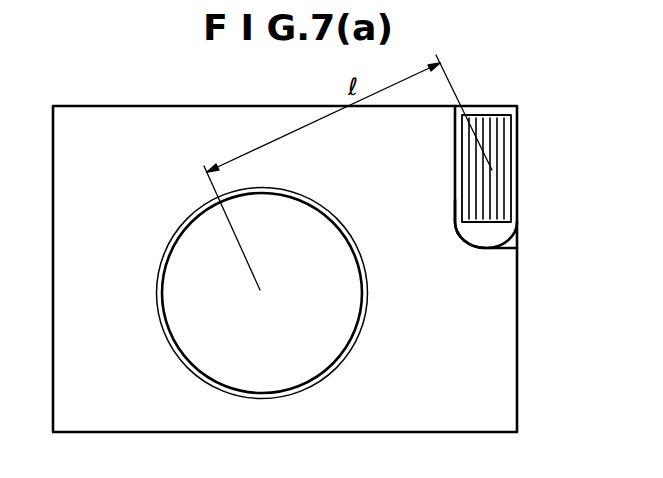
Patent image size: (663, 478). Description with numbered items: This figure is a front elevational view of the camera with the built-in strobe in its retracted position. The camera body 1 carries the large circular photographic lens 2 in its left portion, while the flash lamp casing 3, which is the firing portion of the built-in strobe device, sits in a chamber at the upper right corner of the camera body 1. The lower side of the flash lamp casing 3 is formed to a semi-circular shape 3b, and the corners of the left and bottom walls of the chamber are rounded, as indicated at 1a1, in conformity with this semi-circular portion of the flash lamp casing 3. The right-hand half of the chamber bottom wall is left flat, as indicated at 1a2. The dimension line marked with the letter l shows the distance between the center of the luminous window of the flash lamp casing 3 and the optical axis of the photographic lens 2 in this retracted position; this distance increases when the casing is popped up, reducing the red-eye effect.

The camera body 1 is at (445, 420).
The photographic lens 2 is at (285, 383).
The flash lamp casing 3 is at (517, 153).
The semi-circular shape 3b is at (470, 230).
The rounded corners of chamber 1a1 is at (467, 243).
The flat bottom wall portion 1a2 is at (507, 250).